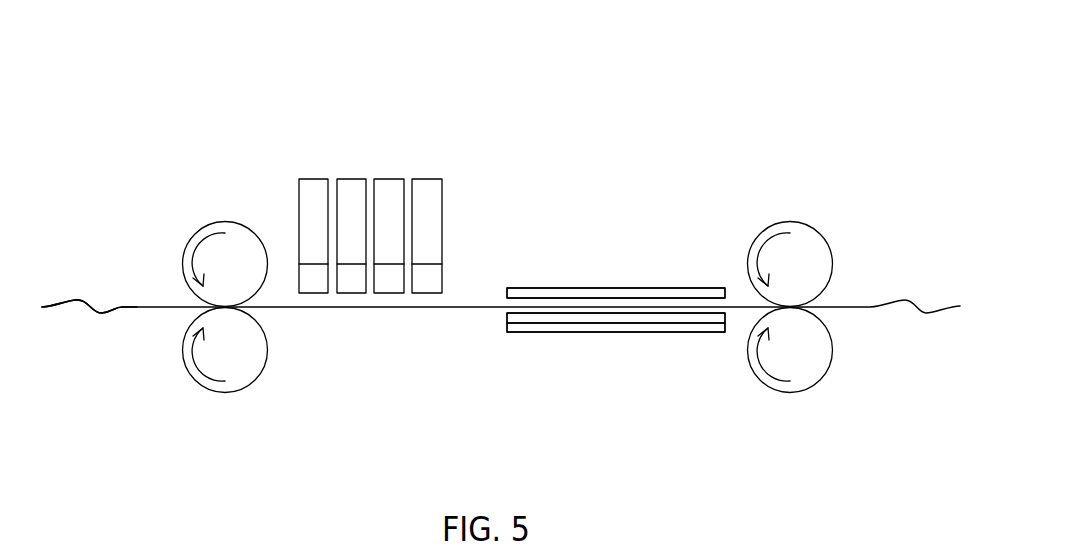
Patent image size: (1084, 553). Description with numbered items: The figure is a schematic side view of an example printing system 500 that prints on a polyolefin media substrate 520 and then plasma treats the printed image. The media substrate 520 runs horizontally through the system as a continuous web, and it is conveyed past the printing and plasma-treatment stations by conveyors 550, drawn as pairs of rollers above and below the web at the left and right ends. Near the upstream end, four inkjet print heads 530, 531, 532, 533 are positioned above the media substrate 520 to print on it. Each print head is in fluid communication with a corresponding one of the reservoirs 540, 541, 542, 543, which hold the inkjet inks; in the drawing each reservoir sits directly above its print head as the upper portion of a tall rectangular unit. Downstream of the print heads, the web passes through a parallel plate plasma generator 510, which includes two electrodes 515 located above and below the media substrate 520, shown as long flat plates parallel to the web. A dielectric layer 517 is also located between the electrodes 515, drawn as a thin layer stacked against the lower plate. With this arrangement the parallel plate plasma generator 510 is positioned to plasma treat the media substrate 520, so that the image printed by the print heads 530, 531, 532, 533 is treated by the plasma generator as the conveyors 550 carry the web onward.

The printing system 500 is at (182, 72).
The parallel plate plasma generator 510 is at (635, 257).
The electrodes 515 is at (600, 292).
The dielectric layer 517 is at (653, 317).
The polyolefin media substrate 520 is at (137, 307).
The inkjet print head 530 is at (317, 277).
The inkjet print head 531 is at (355, 283).
The inkjet print head 532 is at (395, 280).
The inkjet print head 533 is at (432, 280).
The reservoir 540 is at (317, 193).
The reservoir 541 is at (354, 190).
The reservoir 542 is at (392, 192).
The reservoir 543 is at (435, 192).
The conveyors 550 is at (245, 364).